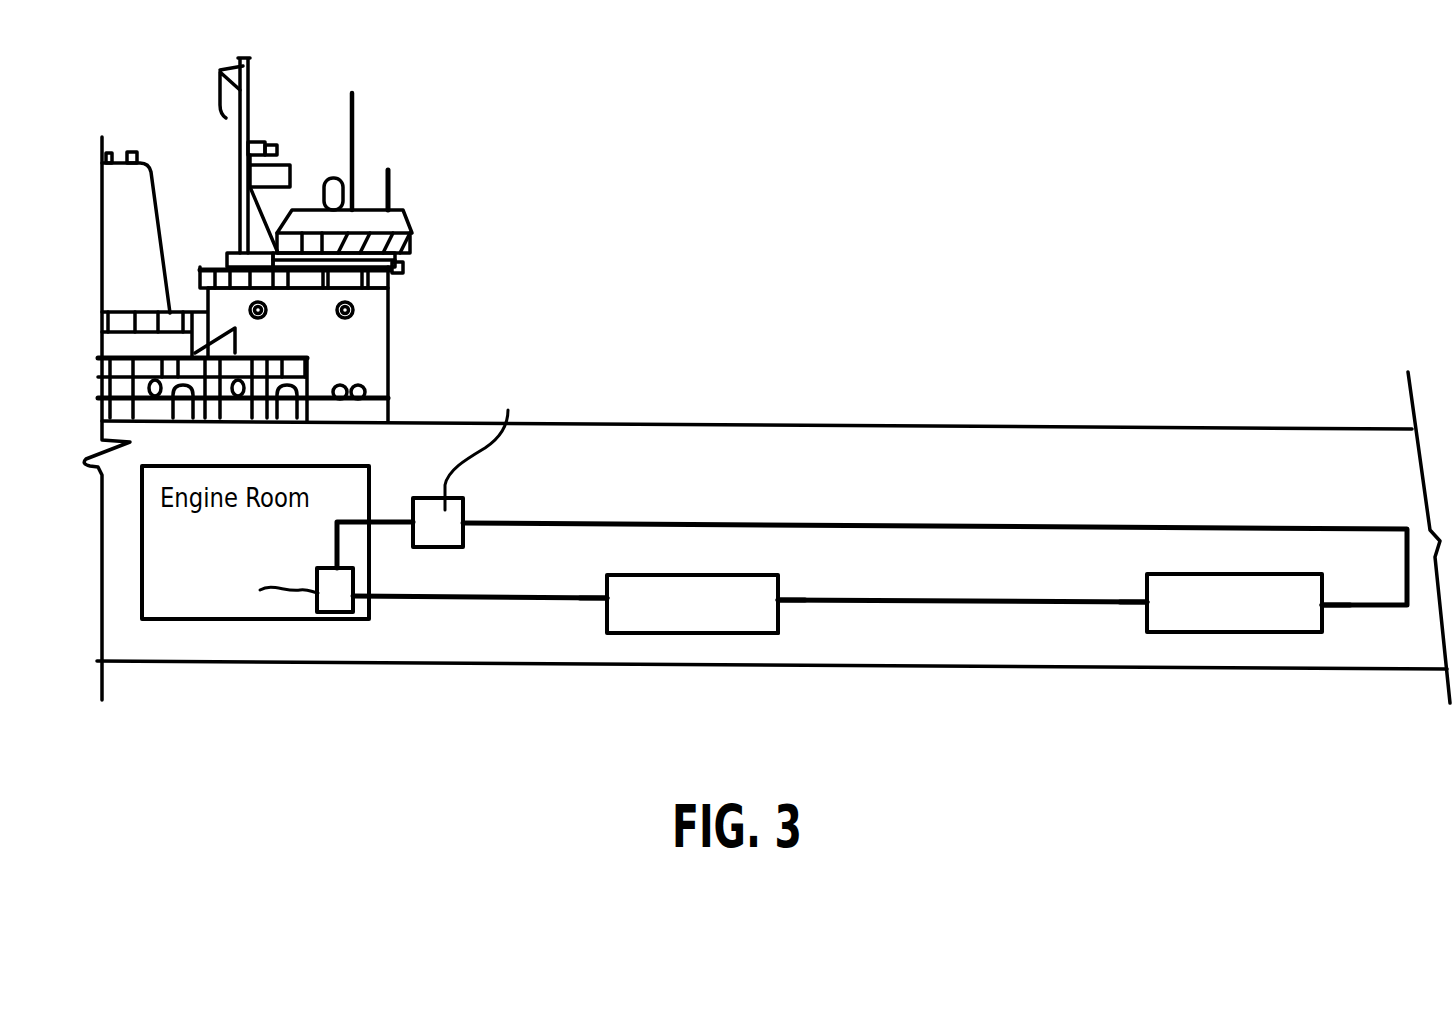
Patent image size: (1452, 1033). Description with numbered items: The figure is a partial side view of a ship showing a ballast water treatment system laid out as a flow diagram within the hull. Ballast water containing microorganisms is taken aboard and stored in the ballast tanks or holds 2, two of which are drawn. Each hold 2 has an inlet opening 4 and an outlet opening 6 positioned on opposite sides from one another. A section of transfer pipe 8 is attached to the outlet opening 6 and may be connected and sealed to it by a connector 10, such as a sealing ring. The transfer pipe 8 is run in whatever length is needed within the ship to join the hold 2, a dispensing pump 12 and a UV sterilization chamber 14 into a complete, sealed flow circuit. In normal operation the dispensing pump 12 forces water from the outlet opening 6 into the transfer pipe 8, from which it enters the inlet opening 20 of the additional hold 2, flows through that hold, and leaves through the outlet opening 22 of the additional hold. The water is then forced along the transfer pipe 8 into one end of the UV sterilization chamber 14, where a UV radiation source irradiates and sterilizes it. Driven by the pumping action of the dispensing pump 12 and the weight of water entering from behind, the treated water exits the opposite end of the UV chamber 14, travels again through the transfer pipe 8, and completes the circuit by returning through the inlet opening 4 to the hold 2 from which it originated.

The ballast tank or hold 2 is at (740, 593).
The inlet opening 4 is at (605, 600).
The outlet opening 6 is at (780, 598).
The transfer pipe 8 is at (497, 598).
The connector 10 is at (780, 607).
The dispensing pump 12 is at (427, 498).
The UV sterilization chamber 14 is at (333, 612).
The inlet opening of additional hold 20 is at (1143, 607).
The outlet opening of additional hold 22 is at (1322, 607).